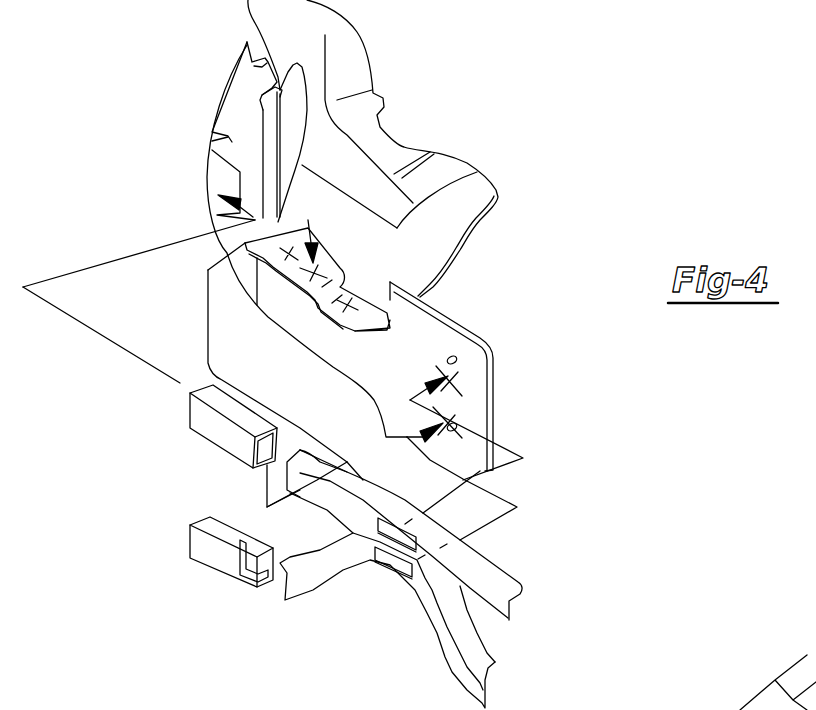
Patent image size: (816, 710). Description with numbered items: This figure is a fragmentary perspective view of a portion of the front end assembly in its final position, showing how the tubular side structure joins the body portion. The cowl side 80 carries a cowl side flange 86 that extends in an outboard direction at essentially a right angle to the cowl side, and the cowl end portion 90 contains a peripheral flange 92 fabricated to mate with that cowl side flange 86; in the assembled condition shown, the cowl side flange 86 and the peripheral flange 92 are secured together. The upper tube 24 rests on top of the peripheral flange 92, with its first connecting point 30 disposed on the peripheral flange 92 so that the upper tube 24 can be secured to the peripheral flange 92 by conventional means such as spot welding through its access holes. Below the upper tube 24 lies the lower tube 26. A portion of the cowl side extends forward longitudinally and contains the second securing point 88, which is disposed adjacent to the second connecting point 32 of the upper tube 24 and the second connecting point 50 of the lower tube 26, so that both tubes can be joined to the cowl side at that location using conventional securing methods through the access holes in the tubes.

The upper tube 24 is at (207, 428).
The lower tube 26 is at (199, 544).
The first connecting point 30 is at (264, 488).
The second connecting point 32 is at (480, 586).
The second connecting point 50 is at (425, 592).
The left cowl side 80 is at (220, 137).
The cowl side flange 86 is at (289, 309).
The second securing point 88 is at (472, 404).
The right cowl end portion 90 is at (461, 215).
The peripheral flange 92 is at (329, 272).